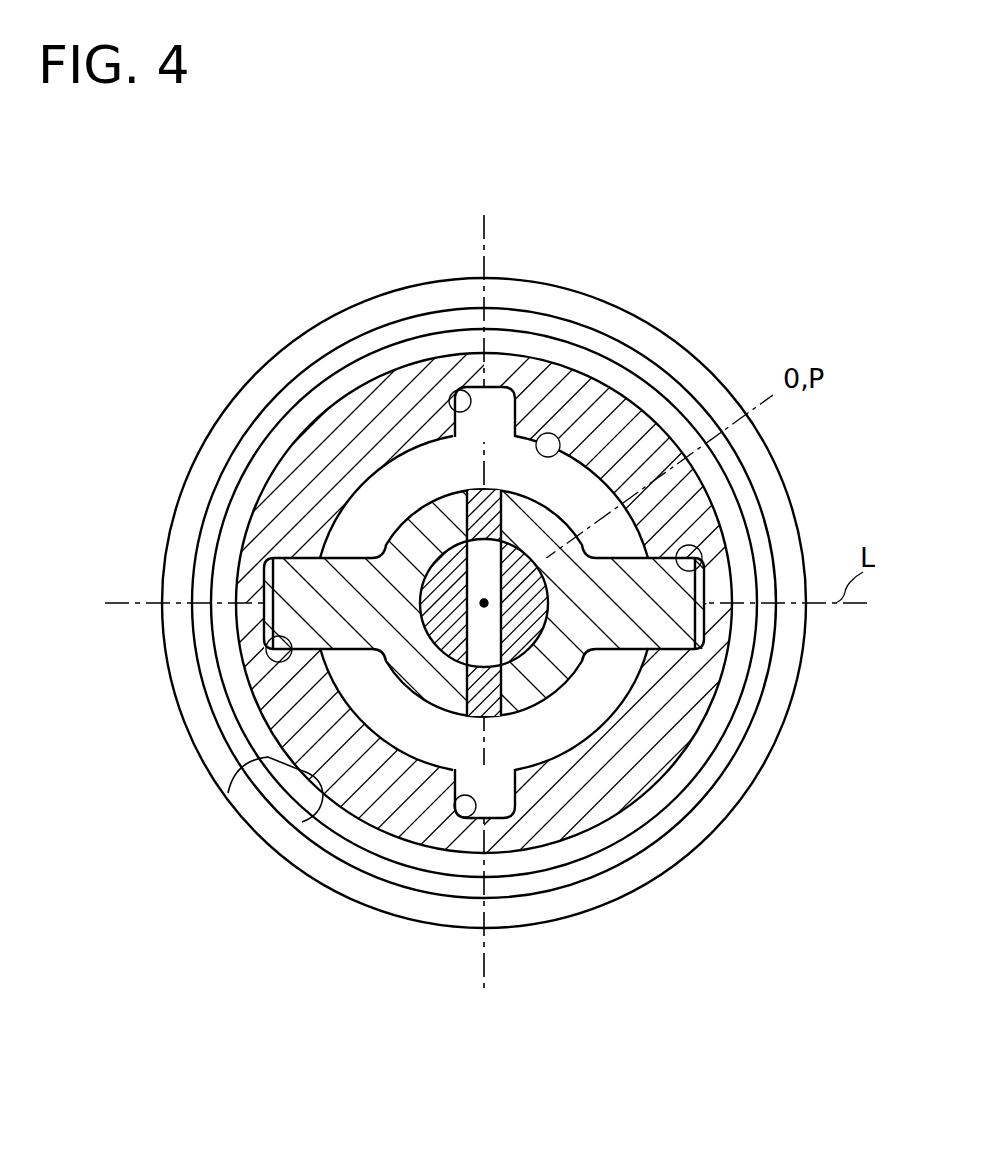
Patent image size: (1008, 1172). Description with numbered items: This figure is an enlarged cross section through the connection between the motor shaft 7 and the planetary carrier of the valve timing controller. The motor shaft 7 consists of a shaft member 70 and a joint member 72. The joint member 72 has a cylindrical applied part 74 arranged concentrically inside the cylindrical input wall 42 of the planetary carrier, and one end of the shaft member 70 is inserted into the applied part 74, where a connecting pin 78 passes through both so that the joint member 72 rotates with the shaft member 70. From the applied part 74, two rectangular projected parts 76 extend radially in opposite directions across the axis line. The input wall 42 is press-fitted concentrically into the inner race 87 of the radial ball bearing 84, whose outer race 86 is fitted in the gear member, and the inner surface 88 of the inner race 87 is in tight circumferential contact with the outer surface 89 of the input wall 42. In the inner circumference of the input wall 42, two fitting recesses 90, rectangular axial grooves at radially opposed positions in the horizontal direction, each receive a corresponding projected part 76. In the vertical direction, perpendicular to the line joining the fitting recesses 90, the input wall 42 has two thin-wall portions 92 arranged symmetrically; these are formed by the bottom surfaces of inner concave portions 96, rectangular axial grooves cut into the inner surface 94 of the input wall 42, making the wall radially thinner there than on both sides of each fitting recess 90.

The motor shaft 7 is at (795, 855).
The input wall 42 is at (306, 450).
The shaft member 70 is at (548, 648).
The joint member 72 is at (540, 695).
The applied part 74 is at (573, 657).
The projected part 76 is at (298, 566).
The connecting pin 78 is at (497, 690).
The radial ball bearing 84 is at (226, 232).
The outer race 86 is at (338, 320).
The inner race 87 is at (327, 392).
The inner surface 88 is at (317, 782).
The outer surface 89 is at (275, 745).
The fitting recess 90 is at (277, 665).
The thin-wall portion 92 is at (499, 365).
The inner surface 94 is at (562, 436).
The inner concave portion 96 is at (450, 405).